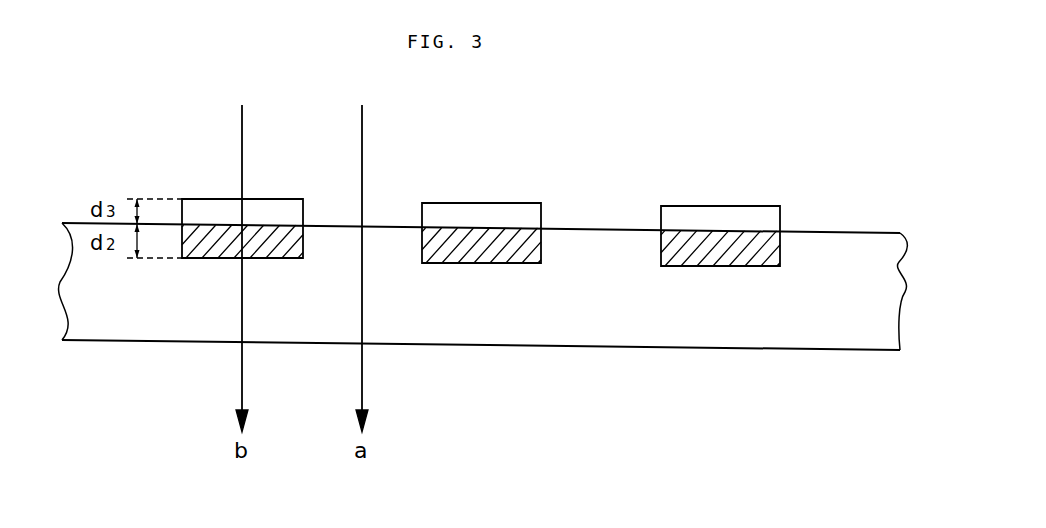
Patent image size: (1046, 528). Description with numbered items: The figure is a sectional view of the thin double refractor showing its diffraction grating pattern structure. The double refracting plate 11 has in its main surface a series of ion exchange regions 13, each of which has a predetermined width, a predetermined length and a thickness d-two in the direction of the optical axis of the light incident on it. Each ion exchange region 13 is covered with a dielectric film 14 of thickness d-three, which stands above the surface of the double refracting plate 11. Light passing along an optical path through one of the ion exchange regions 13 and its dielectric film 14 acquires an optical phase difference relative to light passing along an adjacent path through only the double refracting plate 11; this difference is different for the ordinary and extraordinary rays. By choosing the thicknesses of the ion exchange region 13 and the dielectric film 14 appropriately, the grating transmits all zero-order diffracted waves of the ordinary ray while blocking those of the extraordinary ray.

The double refracting plate 11 is at (195, 337).
The ion exchange region 13 is at (205, 258).
The dielectric film 14 is at (220, 205).